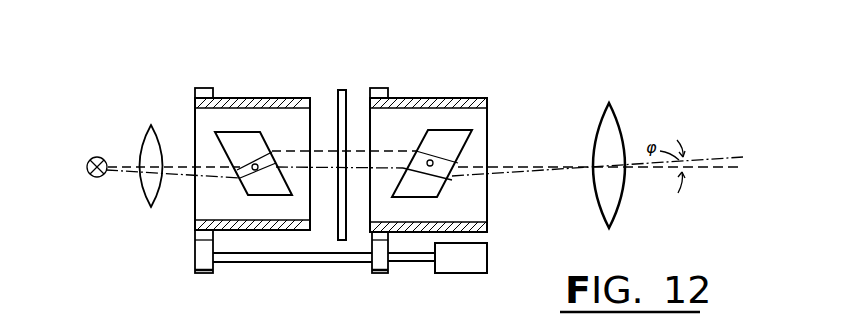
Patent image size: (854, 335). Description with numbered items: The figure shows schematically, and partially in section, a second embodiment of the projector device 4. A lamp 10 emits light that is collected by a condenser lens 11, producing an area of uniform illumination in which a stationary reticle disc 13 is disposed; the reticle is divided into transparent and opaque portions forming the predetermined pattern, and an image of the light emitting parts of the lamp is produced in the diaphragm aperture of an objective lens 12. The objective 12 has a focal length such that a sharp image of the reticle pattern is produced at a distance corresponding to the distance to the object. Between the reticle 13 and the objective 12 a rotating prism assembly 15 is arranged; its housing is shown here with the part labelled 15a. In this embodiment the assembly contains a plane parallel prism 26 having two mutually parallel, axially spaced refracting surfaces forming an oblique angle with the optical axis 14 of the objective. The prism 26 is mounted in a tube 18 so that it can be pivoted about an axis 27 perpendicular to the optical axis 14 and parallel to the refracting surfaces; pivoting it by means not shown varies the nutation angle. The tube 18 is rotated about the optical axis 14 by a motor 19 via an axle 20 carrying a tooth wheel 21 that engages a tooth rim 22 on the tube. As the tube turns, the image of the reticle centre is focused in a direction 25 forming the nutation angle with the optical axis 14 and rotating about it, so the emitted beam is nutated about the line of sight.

The projector device 4 is at (140, 122).
The lamp 10 is at (93, 178).
The condenser lens 11 is at (148, 190).
The first housing 15a is at (272, 123).
The stationary reticle disc 13 is at (347, 86).
The prism assembly 15 is at (451, 150).
The tube 18 is at (488, 226).
The plane parallel prism 26 is at (460, 132).
The pivot axis 27 is at (436, 160).
The tooth rim 22 is at (372, 237).
The tooth wheel 21 is at (350, 272).
The axle 20 is at (417, 263).
The motor 19 is at (467, 267).
The objective lens 12 is at (607, 207).
The optical axis 14 is at (705, 171).
The direction of focused image 25 is at (705, 153).